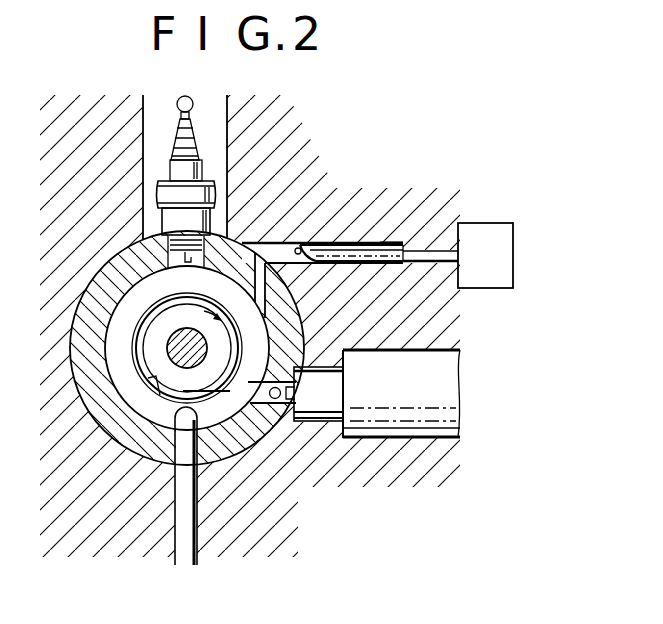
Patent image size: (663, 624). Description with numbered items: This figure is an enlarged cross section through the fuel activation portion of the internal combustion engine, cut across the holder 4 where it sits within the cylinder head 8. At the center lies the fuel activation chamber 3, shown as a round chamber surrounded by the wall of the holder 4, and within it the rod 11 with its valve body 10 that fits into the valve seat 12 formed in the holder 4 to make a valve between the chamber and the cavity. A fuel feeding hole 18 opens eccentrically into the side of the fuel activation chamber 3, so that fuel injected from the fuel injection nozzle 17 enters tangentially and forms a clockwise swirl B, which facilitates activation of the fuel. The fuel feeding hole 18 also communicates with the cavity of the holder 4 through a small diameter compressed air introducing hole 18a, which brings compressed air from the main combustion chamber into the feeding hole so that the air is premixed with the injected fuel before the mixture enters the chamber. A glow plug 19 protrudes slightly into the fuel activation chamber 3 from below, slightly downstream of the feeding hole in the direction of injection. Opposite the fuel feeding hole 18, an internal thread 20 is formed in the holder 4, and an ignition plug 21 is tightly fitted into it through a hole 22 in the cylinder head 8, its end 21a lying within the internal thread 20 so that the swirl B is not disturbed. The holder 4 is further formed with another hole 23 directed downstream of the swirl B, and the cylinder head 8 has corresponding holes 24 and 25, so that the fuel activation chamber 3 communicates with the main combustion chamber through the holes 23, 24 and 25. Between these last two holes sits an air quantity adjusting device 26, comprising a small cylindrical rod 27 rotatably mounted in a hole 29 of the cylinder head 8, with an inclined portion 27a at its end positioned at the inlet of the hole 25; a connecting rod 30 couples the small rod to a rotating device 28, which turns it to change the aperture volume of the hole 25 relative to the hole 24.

The fuel activation chamber 3 is at (138, 297).
The holder 4 is at (110, 417).
The cylinder head 8 is at (68, 306).
The valve body 10 is at (134, 347).
The rod 11 is at (207, 350).
The valve seat 12 is at (165, 382).
The fuel injection nozzle 17 is at (446, 378).
The fuel feeding hole 18 is at (279, 418).
The compressed air introducing hole 18a is at (297, 376).
The glow plug 19 is at (177, 506).
The internal thread 20 is at (229, 238).
The ignition plug 21 is at (163, 197).
The end of ignition plug 21a is at (160, 278).
The hole 22 is at (232, 140).
The hole 23 is at (264, 302).
The hole 24 is at (262, 243).
The hole 25 is at (299, 265).
The air quantity adjusting device 26 is at (507, 222).
The small cylindrical rod 27 is at (384, 263).
The inclined portion 27a is at (300, 248).
The rotating device 28 is at (506, 243).
The hole 29 is at (397, 240).
The connecting rod 30 is at (437, 251).
The swirl B is at (140, 372).